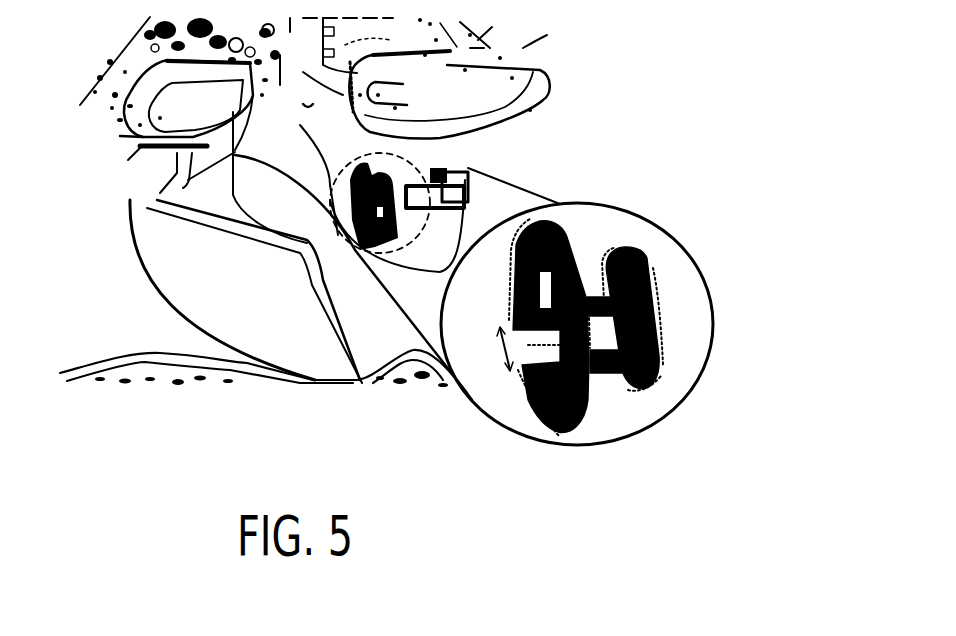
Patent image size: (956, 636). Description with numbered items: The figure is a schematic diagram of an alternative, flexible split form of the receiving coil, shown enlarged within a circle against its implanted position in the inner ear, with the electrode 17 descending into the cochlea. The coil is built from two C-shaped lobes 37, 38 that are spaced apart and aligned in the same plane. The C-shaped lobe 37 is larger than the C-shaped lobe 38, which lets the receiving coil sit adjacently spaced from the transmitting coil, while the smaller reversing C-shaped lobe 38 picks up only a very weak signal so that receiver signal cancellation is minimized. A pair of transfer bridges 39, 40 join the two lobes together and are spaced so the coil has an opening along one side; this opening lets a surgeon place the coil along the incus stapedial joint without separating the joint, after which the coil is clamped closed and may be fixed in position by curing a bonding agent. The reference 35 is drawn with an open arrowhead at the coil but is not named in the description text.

The electrode 17 is at (662, 401).
The implant assembly 35 is at (672, 420).
The C-shaped lobe 37 is at (549, 217).
The C-shaped lobe 38 is at (638, 253).
The transfer bridge 39 is at (586, 296).
The transfer bridge 40 is at (612, 372).